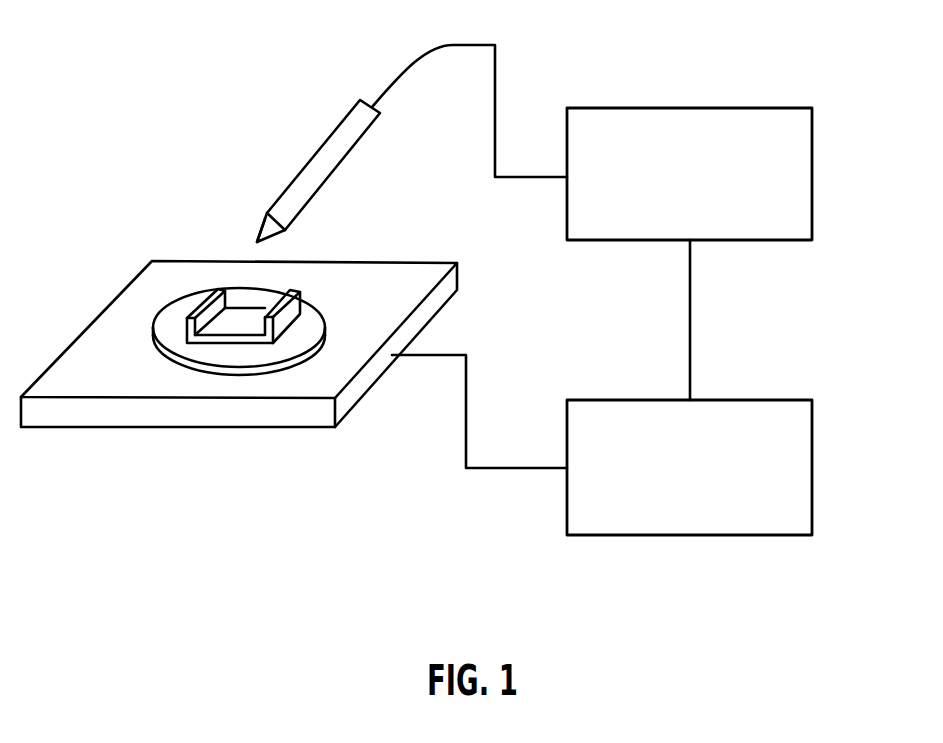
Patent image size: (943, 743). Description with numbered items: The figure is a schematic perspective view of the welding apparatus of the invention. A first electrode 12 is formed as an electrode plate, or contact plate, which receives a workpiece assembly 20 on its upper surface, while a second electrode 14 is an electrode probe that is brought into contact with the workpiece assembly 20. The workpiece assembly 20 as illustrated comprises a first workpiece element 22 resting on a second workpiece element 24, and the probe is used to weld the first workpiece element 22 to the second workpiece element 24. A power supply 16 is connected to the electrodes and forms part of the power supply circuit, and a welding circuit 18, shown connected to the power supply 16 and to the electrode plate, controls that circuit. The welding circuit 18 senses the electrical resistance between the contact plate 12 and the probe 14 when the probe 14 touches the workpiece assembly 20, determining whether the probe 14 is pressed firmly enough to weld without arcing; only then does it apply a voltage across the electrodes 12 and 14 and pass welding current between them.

The first electrode 12 is at (245, 418).
The second electrode 14 is at (317, 153).
The power supply 16 is at (806, 191).
The welding circuit 18 is at (806, 469).
The workpiece assembly 20 is at (247, 296).
The first workpiece element 22 is at (298, 305).
The second workpiece element 24 is at (320, 325).